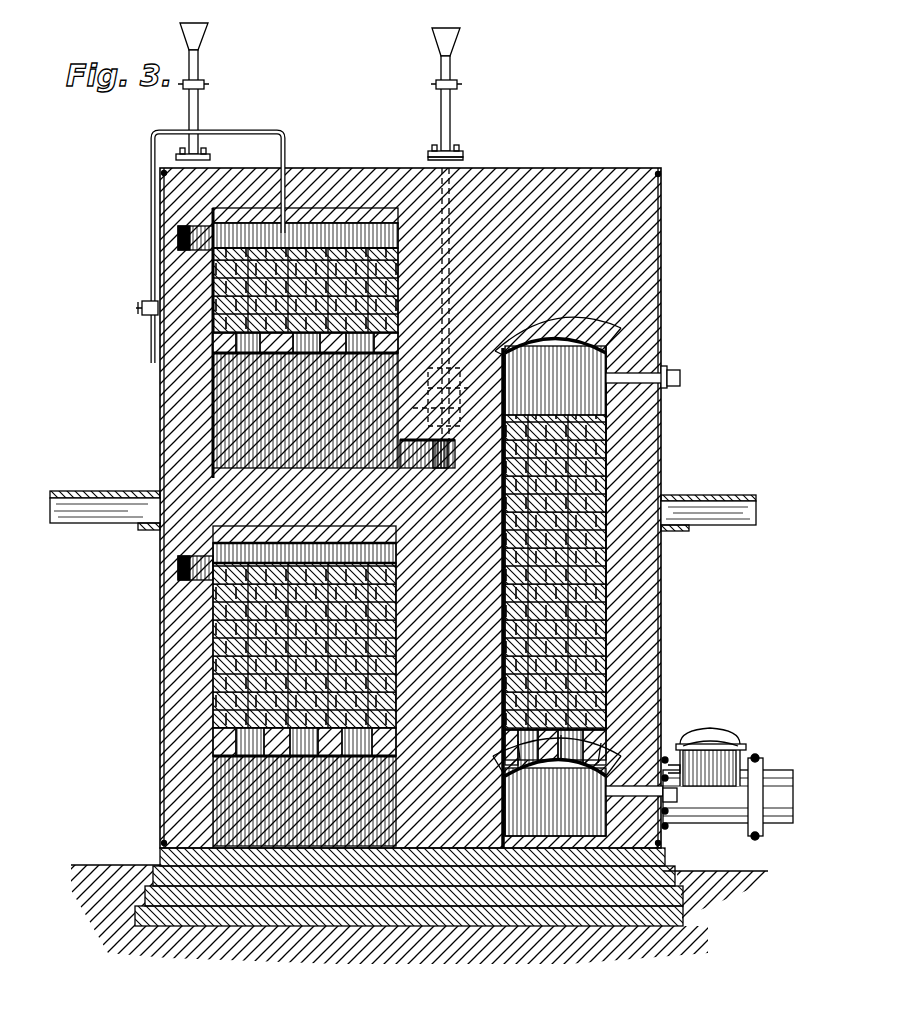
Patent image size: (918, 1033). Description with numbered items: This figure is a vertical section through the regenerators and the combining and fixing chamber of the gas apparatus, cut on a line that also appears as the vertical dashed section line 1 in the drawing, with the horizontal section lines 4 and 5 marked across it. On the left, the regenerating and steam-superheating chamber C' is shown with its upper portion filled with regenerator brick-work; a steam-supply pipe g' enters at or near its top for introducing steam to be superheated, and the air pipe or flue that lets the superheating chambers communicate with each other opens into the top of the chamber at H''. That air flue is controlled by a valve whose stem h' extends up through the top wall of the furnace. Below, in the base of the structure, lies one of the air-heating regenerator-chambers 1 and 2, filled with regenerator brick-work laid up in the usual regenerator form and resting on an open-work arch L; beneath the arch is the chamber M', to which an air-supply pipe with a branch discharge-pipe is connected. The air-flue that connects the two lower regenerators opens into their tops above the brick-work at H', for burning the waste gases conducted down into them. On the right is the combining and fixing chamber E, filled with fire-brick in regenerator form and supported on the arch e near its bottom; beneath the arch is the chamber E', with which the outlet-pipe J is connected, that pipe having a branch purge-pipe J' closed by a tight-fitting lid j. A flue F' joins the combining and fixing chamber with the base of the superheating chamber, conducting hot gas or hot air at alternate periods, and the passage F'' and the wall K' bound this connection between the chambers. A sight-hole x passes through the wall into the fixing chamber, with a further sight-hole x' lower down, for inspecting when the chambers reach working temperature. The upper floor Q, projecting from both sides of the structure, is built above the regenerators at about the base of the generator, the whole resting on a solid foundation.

The air-heating regenerator-chamber 1 is at (298, 960).
The air-heating regenerator-chamber 2 is at (297, 468).
The section line 4 4 is at (690, 431).
The section line 5 5 is at (690, 660).
The regenerating and steam-superheating chamber C' is at (305, 410).
The combining and fixing chamber E is at (558, 523).
The chamber below the arch E' is at (555, 798).
The flue F' is at (427, 464).
The feed passage F'' is at (440, 304).
The air-flue opening H' is at (162, 570).
The air-flue opening H'' is at (161, 240).
The outlet-pipe J is at (727, 797).
The branch purge-pipe J' is at (707, 757).
The lid j is at (710, 729).
The partition wall K' is at (488, 598).
The open-work arch L is at (304, 742).
The chamber below the arch M' is at (304, 801).
The upper floor Q is at (403, 522).
The steam-supply pipe g' is at (205, 247).
The valve stem h' is at (313, 91).
The sight-hole x is at (654, 378).
The pipe x' is at (634, 799).
The arch e is at (557, 755).